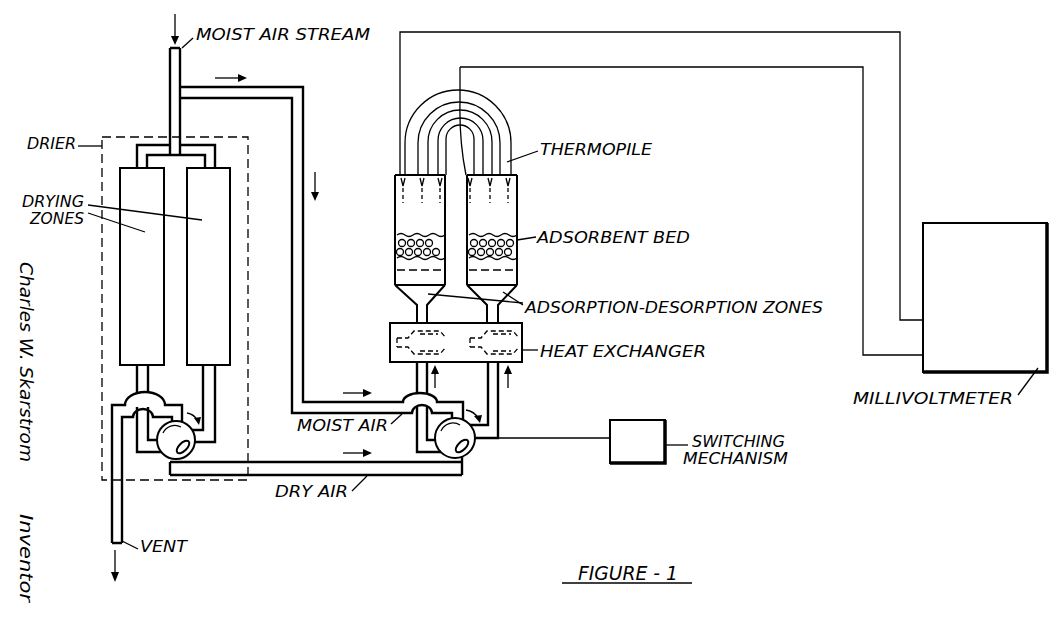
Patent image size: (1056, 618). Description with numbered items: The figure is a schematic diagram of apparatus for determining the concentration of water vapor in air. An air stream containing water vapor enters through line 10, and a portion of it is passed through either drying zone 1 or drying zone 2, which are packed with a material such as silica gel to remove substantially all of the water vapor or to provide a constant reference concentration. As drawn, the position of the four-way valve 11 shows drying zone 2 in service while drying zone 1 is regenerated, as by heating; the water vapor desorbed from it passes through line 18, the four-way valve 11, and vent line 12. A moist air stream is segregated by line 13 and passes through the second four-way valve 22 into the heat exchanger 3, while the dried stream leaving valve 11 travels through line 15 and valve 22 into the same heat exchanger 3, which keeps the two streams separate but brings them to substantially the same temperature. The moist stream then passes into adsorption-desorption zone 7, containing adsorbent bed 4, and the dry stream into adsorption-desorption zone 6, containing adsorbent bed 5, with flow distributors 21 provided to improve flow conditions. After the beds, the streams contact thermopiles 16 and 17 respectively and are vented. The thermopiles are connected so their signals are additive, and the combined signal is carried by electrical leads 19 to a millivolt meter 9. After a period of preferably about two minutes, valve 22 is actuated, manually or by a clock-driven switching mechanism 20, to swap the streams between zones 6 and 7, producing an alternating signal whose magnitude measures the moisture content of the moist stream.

The drying zone 1 is at (142, 266).
The drying zone 2 is at (208, 266).
The heat exchanger 3 is at (523, 332).
The adsorbent bed 4 is at (398, 243).
The adsorbent bed 5 is at (518, 247).
The adsorption-desorption zone 6 is at (510, 282).
The adsorption-desorption zone 7 is at (402, 294).
The millivolt meter 9 is at (985, 297).
The line 10 is at (169, 68).
The four-way valve 11 is at (166, 452).
The vent line 12 is at (122, 517).
The line 13 is at (303, 258).
The line 15 is at (402, 474).
The thermopile 16 is at (395, 200).
The thermopile 17 is at (518, 200).
The line 18 is at (137, 383).
The electrical leads 19 is at (863, 140).
The switching mechanism 20 is at (622, 420).
The flow distributors 21 is at (412, 270).
The four-way valve 22 is at (472, 452).